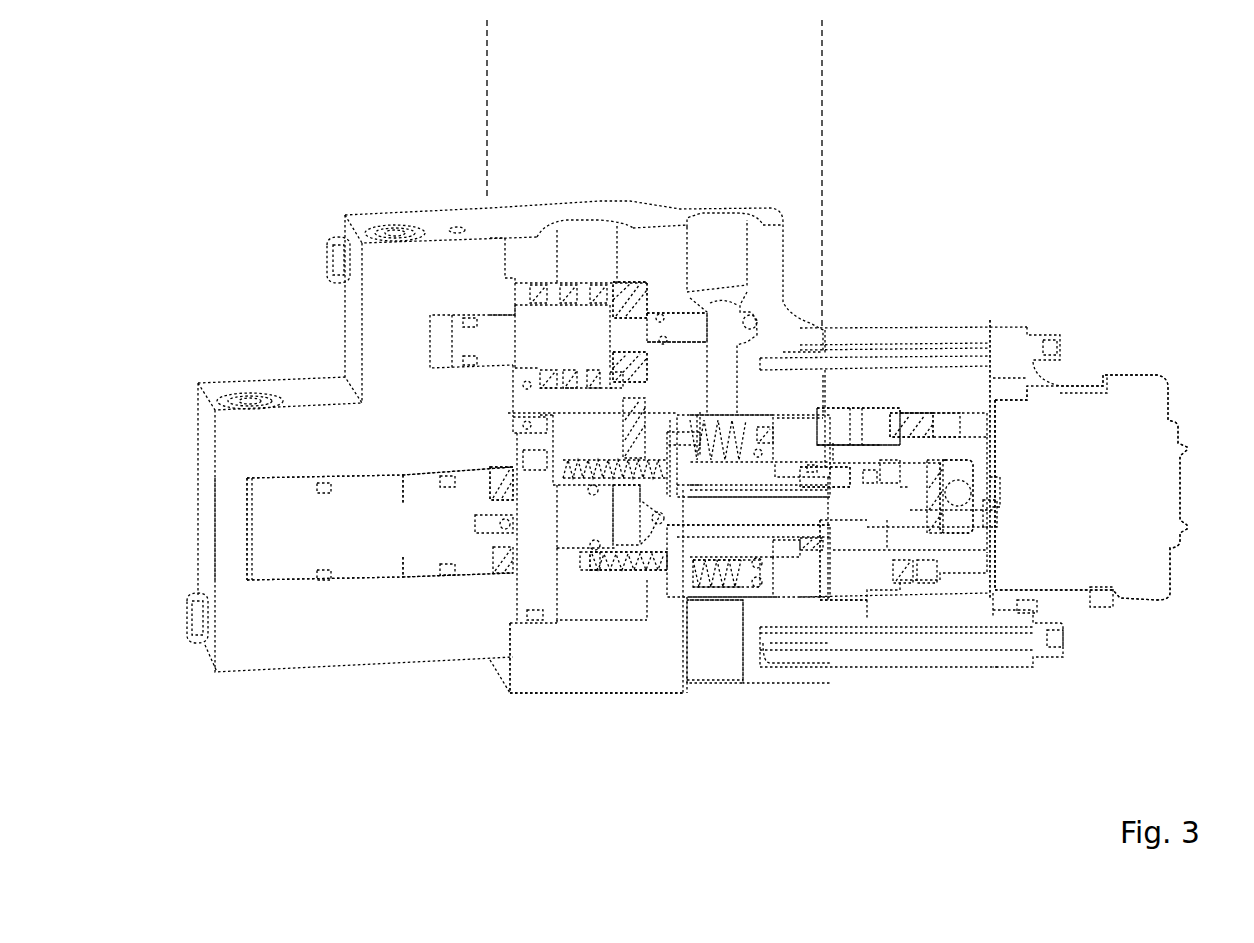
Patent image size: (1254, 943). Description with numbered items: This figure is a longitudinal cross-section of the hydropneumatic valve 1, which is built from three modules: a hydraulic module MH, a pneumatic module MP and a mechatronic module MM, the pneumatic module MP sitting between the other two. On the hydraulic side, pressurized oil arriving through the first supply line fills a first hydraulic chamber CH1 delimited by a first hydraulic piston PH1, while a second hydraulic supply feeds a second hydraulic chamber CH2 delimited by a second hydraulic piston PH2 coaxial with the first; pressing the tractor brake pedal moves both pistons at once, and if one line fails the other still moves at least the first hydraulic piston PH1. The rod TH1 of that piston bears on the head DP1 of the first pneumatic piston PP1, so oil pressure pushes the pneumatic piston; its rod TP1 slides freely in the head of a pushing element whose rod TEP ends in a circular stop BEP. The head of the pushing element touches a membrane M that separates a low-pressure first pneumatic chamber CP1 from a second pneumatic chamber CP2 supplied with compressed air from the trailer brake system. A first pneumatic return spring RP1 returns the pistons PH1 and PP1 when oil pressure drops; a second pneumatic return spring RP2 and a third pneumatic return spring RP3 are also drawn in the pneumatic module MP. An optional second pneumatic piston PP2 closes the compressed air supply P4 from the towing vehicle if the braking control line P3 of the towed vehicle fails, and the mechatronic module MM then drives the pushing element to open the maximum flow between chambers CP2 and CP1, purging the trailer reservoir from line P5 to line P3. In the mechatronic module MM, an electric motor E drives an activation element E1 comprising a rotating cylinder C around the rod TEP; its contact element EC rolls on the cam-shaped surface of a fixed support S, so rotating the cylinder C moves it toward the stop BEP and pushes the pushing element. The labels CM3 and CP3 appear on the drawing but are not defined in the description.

The hydropneumatic valve 1 is at (1120, 172).
The hydraulic module MH is at (299, 48).
The pneumatic module MP is at (660, 47).
The mechatronic module MM is at (978, 47).
The third connection mouth CM3 is at (330, 237).
The head of the first pneumatic piston DP1 is at (535, 465).
The second pneumatic piston PP2 is at (568, 335).
The braking control line of the towed vehicle P3 is at (590, 260).
The second pneumatic return spring RP2 is at (633, 290).
The third pneumatic chamber CP3 is at (632, 300).
The membrane M is at (638, 355).
The compressed air supply line P4 is at (723, 243).
The fixed support S is at (877, 418).
The contact element EC is at (917, 430).
The rotating cylinder C is at (935, 428).
The electric motor E is at (1138, 418).
The second hydraulic chamber CH2 is at (247, 490).
The second hydraulic piston PH2 is at (280, 555).
The first hydraulic piston PH1 is at (433, 540).
The first hydraulic chamber CH1 is at (400, 583).
The rod of the first hydraulic piston TH1 is at (510, 503).
The first pneumatic piston PP1 is at (573, 518).
The first pneumatic return spring RP1 is at (606, 540).
The rod of the first pneumatic piston TP1 is at (617, 563).
The first pneumatic chamber CP1 is at (627, 600).
The compressed air supply line of the second vehicle P5 is at (700, 655).
The third pneumatic return spring RP3 is at (713, 597).
The second pneumatic chamber CP2 is at (760, 587).
The rod of the pushing element TEP is at (792, 507).
The activation element E1 is at (878, 587).
The stop of the pushing element BEP is at (900, 487).